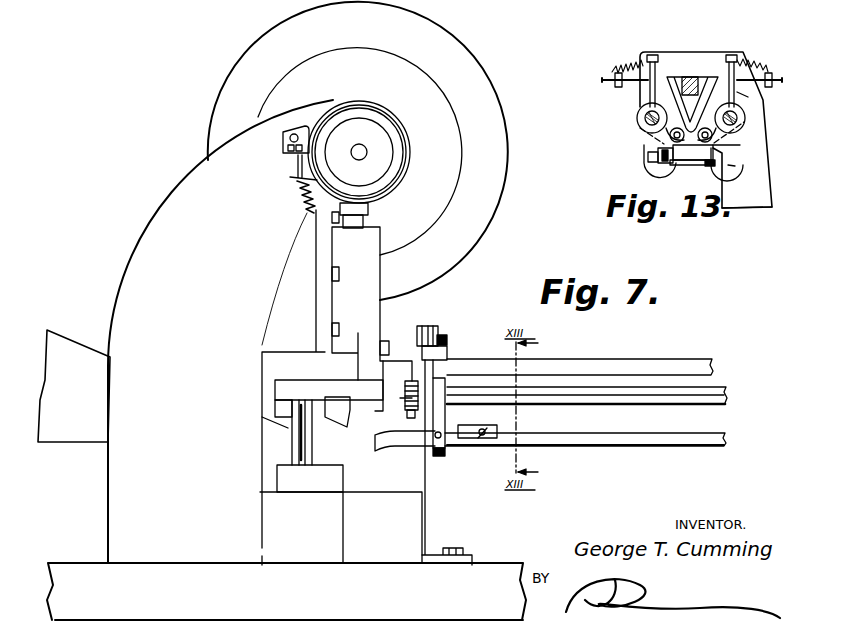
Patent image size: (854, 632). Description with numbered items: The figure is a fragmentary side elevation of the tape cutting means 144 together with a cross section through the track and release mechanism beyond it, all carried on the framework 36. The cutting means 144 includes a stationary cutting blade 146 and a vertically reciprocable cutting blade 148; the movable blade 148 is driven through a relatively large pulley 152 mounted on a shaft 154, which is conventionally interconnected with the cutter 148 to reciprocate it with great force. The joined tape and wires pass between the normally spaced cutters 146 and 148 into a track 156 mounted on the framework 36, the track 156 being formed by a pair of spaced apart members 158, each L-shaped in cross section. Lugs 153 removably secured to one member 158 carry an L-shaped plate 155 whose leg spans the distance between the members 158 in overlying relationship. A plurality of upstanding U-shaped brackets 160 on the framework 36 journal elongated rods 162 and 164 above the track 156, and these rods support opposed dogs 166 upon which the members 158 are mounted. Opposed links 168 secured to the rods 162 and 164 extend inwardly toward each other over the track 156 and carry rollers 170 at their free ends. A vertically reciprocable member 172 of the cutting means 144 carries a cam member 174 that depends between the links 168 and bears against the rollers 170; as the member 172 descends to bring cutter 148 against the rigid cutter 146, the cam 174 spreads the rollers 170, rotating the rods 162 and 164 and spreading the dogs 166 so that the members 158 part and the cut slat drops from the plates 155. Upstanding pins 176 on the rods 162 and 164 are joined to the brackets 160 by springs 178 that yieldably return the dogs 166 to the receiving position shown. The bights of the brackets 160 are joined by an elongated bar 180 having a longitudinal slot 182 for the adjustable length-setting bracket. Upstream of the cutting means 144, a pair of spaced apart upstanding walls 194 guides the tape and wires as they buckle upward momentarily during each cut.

In FIG. 7, the framework 36 is at (486, 575).
In FIG. 7, the cutting means 144 is at (424, 289).
In FIG. 7, the stationary cutting blade 146 is at (333, 458).
In FIG. 7, the vertically reciprocable cutting blade 148 is at (345, 412).
In FIG. 7, the pulley 152 is at (474, 75).
In FIG. 7, the lugs 153 is at (481, 429).
In FIG. 13, the lugs 153 is at (657, 147).
In FIG. 7, the shaft 154 is at (364, 149).
In FIG. 13, the L-shaped plate 155 is at (735, 165).
In FIG. 13, the track 156 is at (660, 165).
In FIG. 7, the spaced apart members 158 is at (604, 446).
In FIG. 13, the spaced apart members 158 is at (650, 159).
In FIG. 7, the U-shaped brackets 160 is at (434, 500).
In FIG. 13, the U-shaped brackets 160 is at (745, 206).
In FIG. 7, the rod 162 is at (728, 399).
In FIG. 13, the rod 162 is at (645, 118).
In FIG. 13, the rod 164 is at (742, 118).
In FIG. 7, the dogs 166 is at (446, 452).
In FIG. 13, the dogs 166 is at (660, 175).
In FIG. 7, the links 168 is at (407, 406).
In FIG. 13, the links 168 is at (748, 95).
In FIG. 7, the rollers 170 is at (408, 428).
In FIG. 13, the rollers 170 is at (691, 154).
In FIG. 7, the vertically reciprocable member 172 is at (368, 284).
In FIG. 7, the cam member 174 is at (406, 362).
In FIG. 13, the cam member 174 is at (668, 42).
In FIG. 7, the upstanding pins 176 is at (447, 356).
In FIG. 13, the upstanding pins 176 is at (648, 94).
In FIG. 7, the spring 178 is at (441, 342).
In FIG. 13, the spring 178 is at (624, 64).
In FIG. 7, the elongated bar 180 is at (611, 364).
In FIG. 13, the elongated bar 180 is at (686, 77).
In FIG. 13, the longitudinal slot 182 is at (692, 75).
In FIG. 7, the upstanding walls 194 is at (80, 356).